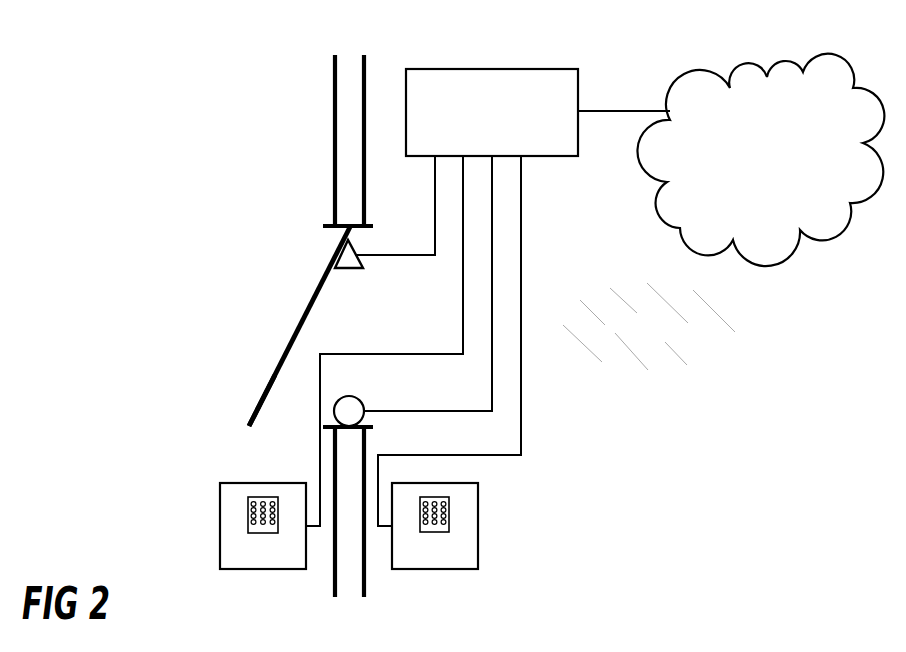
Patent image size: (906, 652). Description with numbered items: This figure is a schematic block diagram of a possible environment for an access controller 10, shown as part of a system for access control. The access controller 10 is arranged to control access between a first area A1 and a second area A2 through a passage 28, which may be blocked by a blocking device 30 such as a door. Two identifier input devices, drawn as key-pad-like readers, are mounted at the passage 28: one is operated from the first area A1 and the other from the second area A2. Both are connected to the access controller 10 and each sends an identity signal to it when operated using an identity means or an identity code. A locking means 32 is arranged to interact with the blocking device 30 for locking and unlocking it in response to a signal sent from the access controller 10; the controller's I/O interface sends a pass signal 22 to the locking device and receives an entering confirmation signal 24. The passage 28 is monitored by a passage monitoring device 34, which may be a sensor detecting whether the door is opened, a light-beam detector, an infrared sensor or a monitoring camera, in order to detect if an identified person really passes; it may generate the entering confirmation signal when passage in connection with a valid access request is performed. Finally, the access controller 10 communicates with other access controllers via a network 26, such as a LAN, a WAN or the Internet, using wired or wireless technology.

The access controller 10 is at (523, 83).
The pass signal 22 is at (493, 233).
The entering confirmation signal 24 is at (432, 255).
The network 26 is at (768, 172).
The passage 28 is at (345, 308).
The blocking device 30 is at (260, 395).
The locking means 32 is at (351, 407).
The passage monitoring device 34 is at (342, 249).
The first area A1 is at (74, 322).
The second area A2 is at (660, 337).